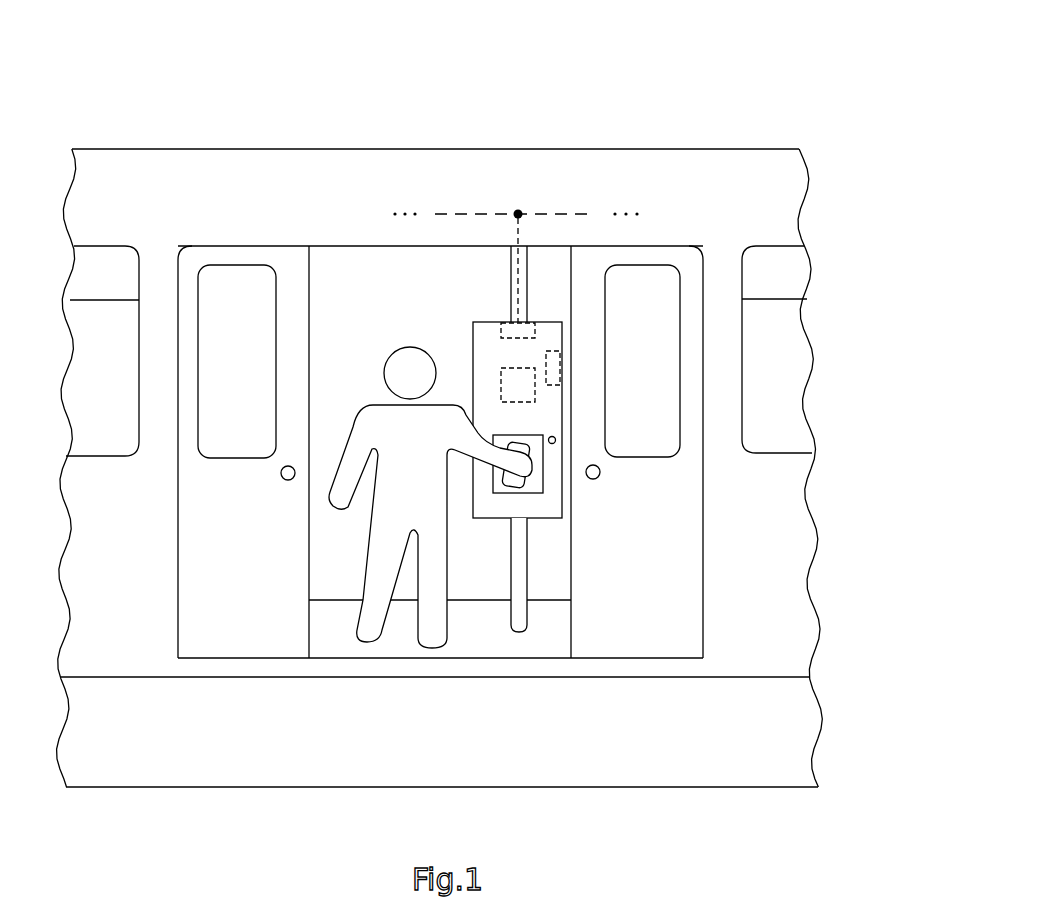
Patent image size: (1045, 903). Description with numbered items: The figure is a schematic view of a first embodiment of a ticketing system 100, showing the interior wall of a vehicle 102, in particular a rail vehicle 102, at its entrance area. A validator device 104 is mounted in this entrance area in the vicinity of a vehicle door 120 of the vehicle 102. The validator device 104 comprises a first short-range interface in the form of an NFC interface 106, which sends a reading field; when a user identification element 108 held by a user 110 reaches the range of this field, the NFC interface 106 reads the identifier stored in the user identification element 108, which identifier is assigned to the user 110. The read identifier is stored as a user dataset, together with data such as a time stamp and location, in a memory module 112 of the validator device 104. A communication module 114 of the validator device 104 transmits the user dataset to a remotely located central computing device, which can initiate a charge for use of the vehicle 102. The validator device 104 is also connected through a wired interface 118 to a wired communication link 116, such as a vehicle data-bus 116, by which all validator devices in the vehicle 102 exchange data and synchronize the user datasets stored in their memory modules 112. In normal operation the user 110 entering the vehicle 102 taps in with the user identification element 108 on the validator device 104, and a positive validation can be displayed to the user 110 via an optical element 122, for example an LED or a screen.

The ticketing system 100 is at (652, 110).
The vehicle 102 is at (216, 201).
The validator device 104 is at (553, 506).
The NFC interface 106 is at (535, 478).
The user identification element 108 is at (512, 480).
The user 110 is at (430, 466).
The memory module 112 is at (523, 388).
The communication module 114 is at (557, 362).
The wired communication link 116 is at (548, 213).
The wired interface 118 is at (509, 327).
The vehicle door 120 is at (660, 621).
The optical element 122 is at (556, 440).